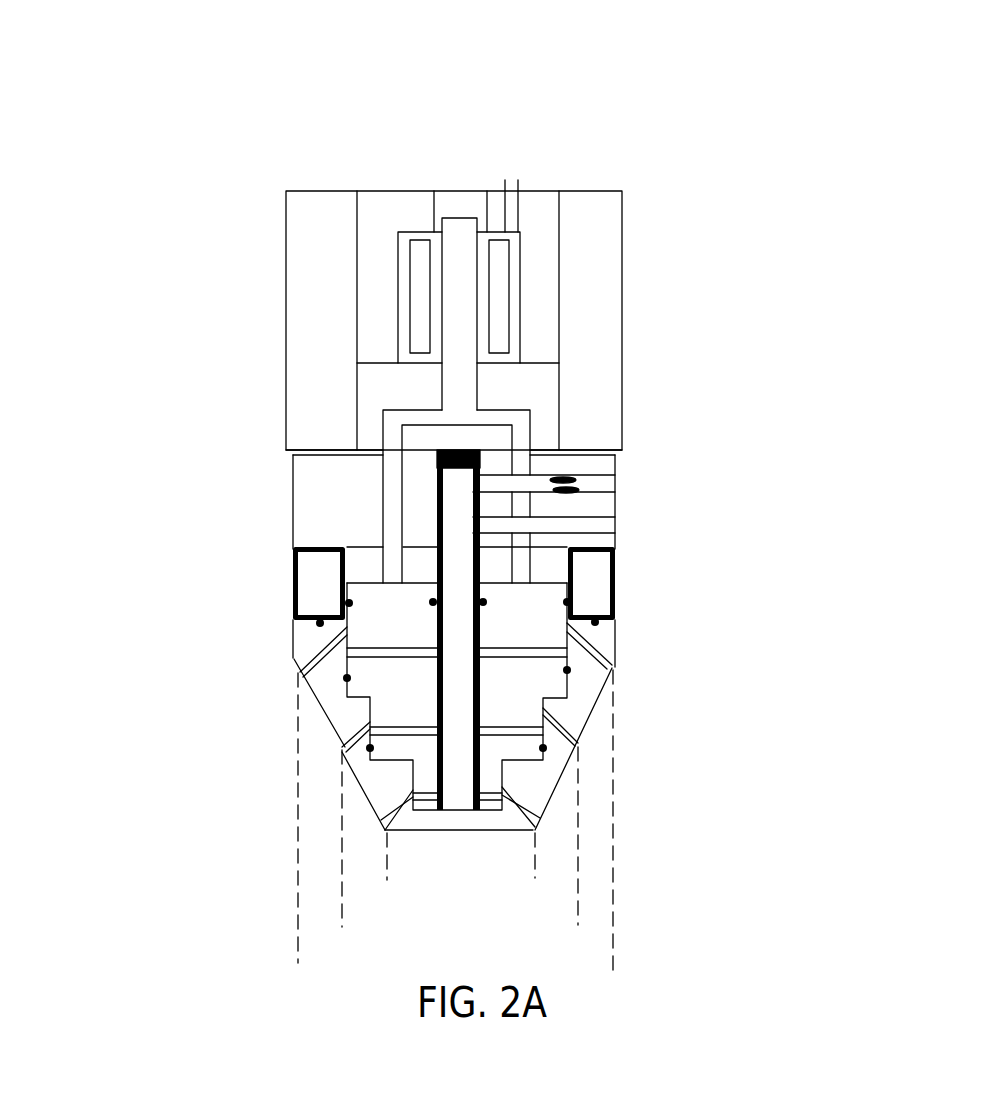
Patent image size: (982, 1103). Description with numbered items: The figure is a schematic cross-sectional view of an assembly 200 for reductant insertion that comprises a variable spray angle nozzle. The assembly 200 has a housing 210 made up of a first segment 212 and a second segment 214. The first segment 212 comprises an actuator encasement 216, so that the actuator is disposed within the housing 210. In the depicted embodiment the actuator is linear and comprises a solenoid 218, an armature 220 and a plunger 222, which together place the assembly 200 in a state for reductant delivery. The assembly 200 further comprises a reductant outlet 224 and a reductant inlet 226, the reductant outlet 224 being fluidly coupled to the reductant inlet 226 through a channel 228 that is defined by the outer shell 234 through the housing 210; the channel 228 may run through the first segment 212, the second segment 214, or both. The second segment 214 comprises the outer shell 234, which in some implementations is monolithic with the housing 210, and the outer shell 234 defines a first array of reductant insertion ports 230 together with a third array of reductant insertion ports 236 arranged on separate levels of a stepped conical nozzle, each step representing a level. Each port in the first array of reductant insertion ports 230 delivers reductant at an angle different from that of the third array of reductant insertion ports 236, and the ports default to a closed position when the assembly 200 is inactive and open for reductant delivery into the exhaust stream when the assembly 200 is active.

The assembly 200 is at (103, 72).
The housing 210 is at (548, 188).
The first segment 212 is at (300, 315).
The second segment 214 is at (297, 521).
The actuator encasement 216 is at (623, 227).
The solenoid 218 is at (500, 289).
The armature 220 is at (518, 334).
The plunger 222 is at (530, 463).
The reductant outlet 224 is at (603, 488).
The reductant inlet 226 is at (610, 530).
The channel 228 is at (465, 793).
The first array of reductant insertion ports 230 is at (397, 880).
The outer shell 234 is at (607, 642).
The third array of reductant insertion ports 236 is at (302, 962).